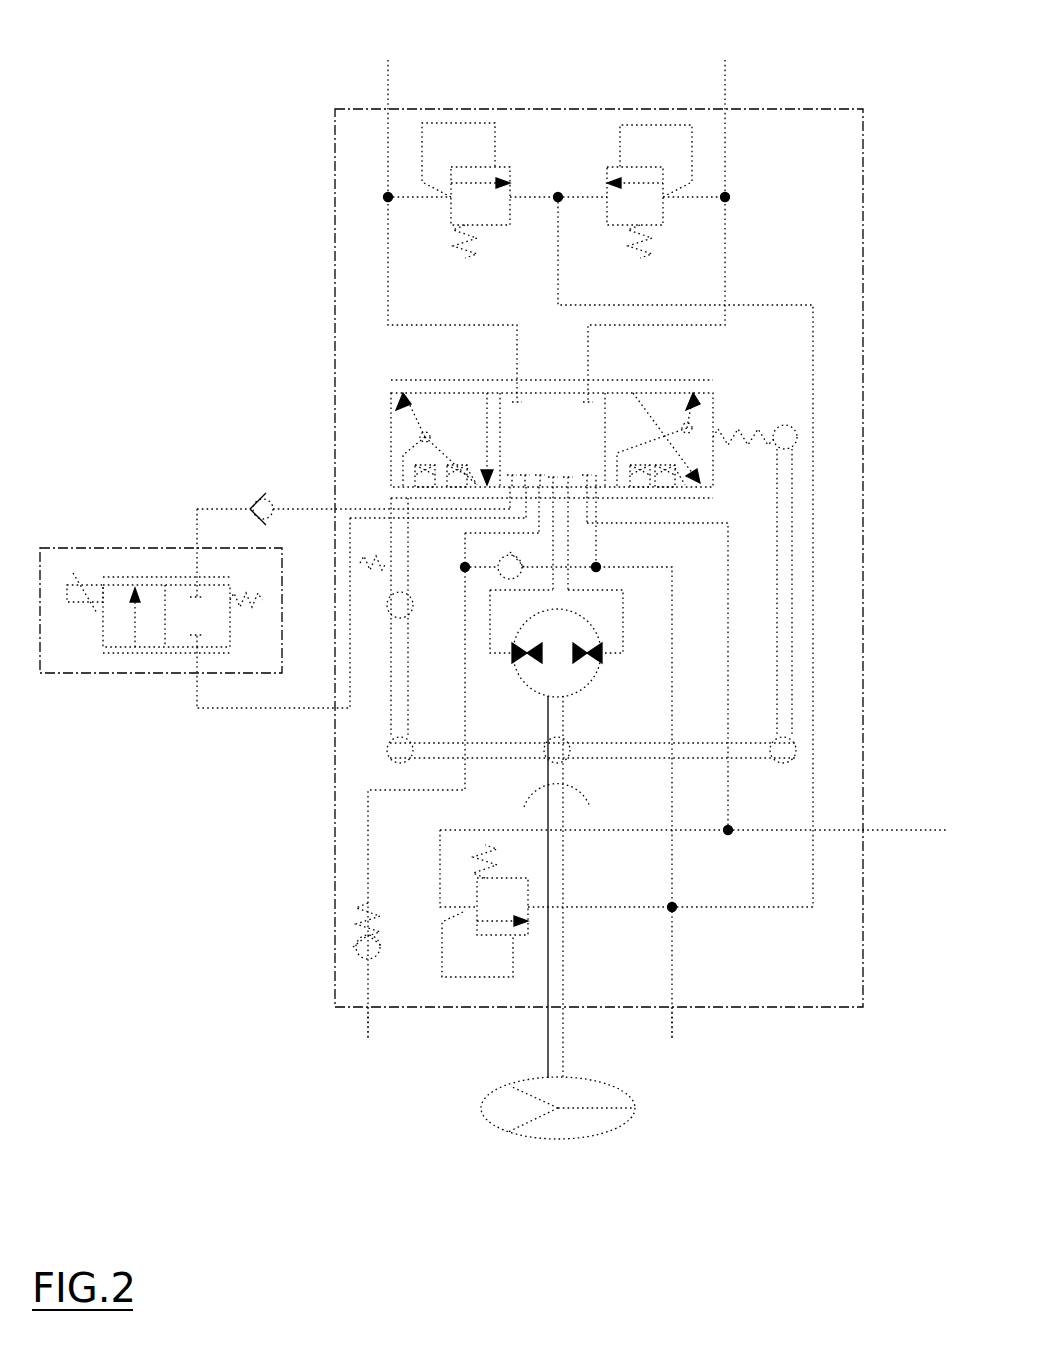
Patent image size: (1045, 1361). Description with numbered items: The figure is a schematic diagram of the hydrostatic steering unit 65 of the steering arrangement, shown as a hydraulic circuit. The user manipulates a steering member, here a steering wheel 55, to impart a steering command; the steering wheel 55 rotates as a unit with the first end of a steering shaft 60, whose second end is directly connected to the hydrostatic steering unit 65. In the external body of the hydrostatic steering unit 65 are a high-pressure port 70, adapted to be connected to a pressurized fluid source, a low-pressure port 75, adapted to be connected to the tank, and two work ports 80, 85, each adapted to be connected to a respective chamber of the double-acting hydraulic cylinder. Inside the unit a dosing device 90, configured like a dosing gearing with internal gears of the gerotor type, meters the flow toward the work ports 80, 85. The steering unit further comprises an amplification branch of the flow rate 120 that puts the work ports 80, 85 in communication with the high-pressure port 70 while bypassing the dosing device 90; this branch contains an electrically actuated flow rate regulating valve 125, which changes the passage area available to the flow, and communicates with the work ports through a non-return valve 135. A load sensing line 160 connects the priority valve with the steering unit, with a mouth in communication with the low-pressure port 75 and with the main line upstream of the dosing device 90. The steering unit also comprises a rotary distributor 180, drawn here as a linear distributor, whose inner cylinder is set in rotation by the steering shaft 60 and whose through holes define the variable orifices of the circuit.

The steering wheel 55 is at (582, 1138).
The steering shaft 60 is at (548, 1053).
The hydrostatic steering unit 65 is at (326, 113).
The high-pressure port 70 is at (367, 1008).
The low-pressure port 75 is at (673, 1007).
The work port 80 is at (388, 108).
The work port 85 is at (727, 108).
The dosing device 90 is at (520, 677).
The amplification branch of the flow rate 120 is at (233, 708).
The flow rate regulating valve 125 is at (118, 647).
The non-return valve 135 is at (262, 500).
The load sensing line 160 is at (790, 830).
The rotary distributor 180 is at (378, 386).